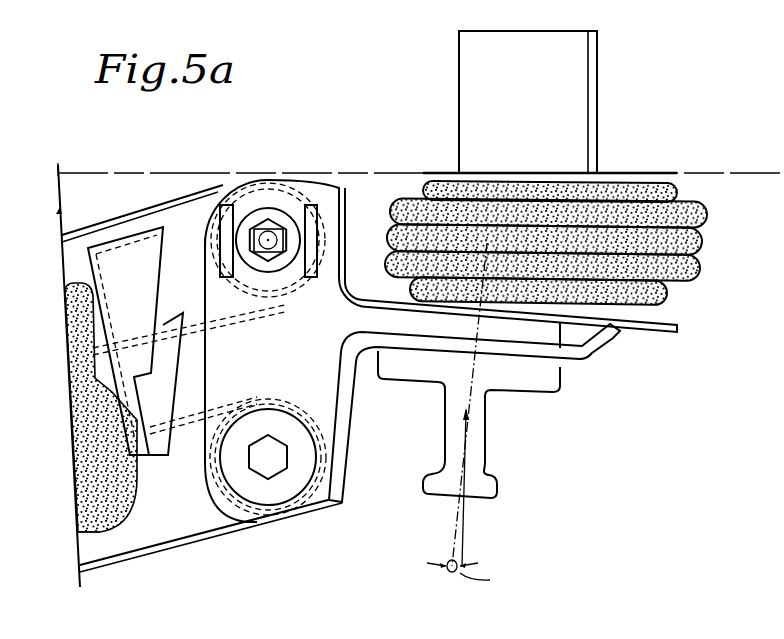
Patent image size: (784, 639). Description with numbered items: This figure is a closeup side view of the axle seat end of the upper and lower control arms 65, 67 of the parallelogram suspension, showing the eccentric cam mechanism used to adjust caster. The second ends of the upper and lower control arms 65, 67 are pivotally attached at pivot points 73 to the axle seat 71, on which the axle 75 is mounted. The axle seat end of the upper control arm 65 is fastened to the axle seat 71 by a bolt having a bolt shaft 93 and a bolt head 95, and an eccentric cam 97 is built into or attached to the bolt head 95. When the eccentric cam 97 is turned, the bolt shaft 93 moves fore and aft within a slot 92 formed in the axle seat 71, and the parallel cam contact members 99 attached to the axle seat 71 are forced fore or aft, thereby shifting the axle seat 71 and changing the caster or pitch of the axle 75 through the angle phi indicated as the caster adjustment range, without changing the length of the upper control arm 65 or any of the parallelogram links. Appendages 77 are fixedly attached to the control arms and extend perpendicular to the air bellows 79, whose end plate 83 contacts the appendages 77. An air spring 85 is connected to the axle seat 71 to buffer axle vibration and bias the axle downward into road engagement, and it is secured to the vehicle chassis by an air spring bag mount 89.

The upper control arm 65 is at (73, 250).
The lower control arm 67 is at (157, 537).
The axle seat 71 is at (320, 333).
The pivot points 73 is at (275, 463).
The axle 75 is at (490, 487).
The appendages 77 is at (128, 257).
The air bellows 79 is at (76, 490).
The end plate 83 is at (83, 380).
The air spring 85 is at (698, 253).
The air spring bag mount 89 is at (553, 43).
The slot 92 is at (260, 227).
The bolt shaft 93 is at (285, 230).
The bolt head 95 is at (267, 218).
The eccentric cam 97 is at (287, 270).
The cam contact members 99 is at (220, 200).